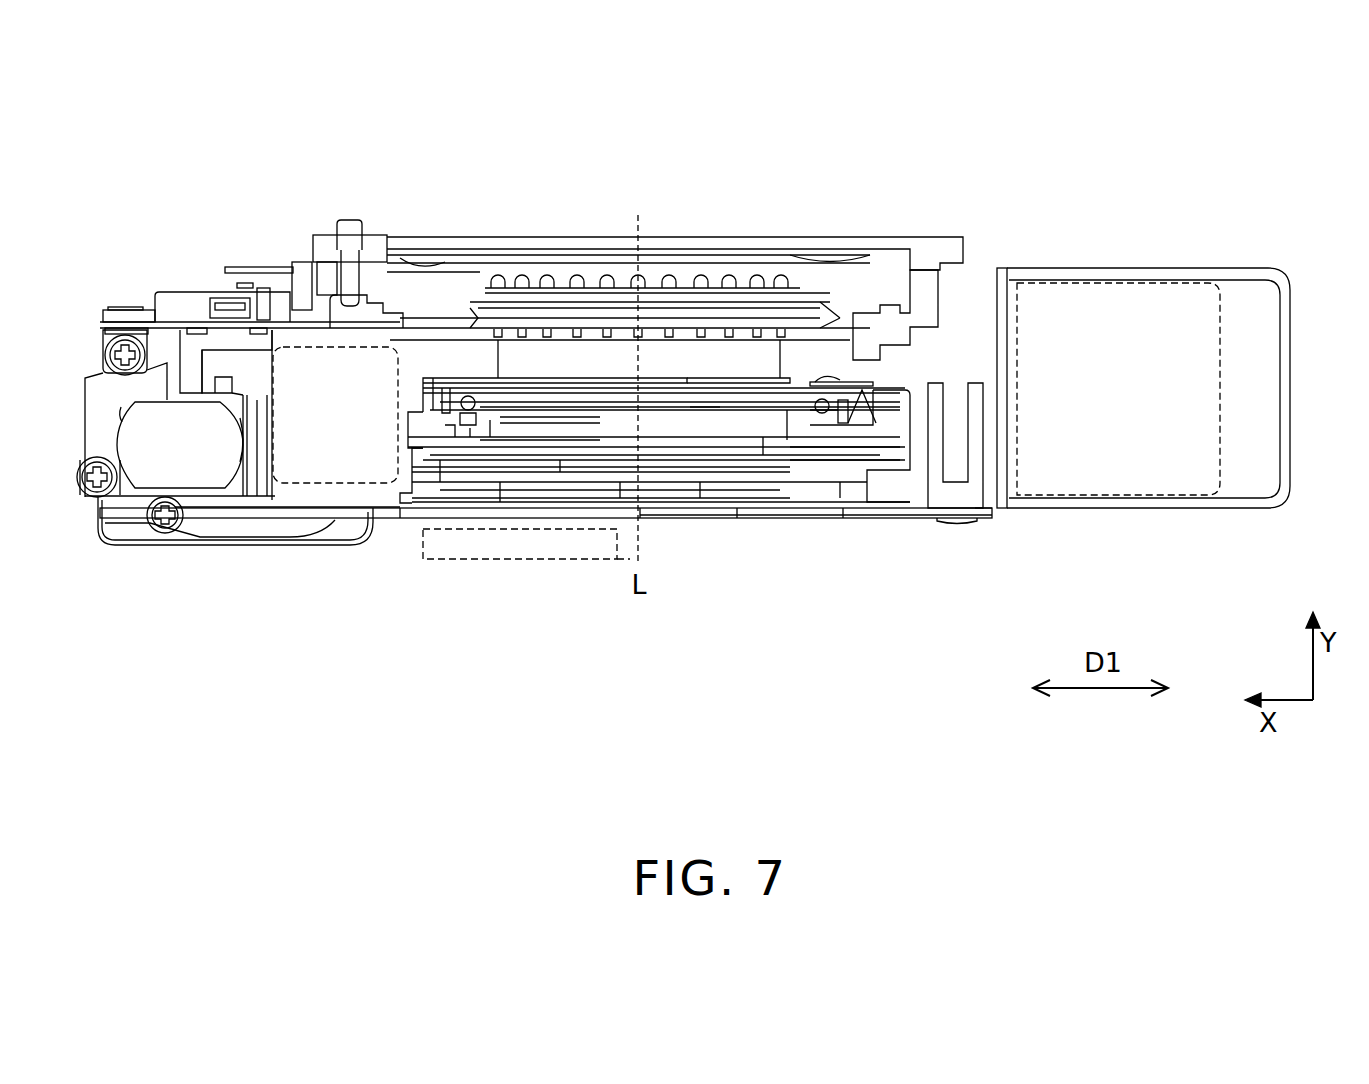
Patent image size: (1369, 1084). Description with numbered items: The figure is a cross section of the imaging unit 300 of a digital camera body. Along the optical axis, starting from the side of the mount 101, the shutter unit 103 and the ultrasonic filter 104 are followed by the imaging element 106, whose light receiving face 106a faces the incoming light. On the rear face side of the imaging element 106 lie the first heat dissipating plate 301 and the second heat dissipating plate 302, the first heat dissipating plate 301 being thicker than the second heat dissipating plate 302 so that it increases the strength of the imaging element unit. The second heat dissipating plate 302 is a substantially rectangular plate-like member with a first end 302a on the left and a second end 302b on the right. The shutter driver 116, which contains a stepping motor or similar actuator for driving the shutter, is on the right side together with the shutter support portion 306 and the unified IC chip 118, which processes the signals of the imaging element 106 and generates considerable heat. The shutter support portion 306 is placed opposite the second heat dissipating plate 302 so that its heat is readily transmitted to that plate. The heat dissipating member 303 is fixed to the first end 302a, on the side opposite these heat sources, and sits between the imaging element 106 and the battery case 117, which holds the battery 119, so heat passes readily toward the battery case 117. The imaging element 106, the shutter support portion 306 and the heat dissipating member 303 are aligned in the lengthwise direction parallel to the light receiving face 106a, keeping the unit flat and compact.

The mount 101 is at (425, 232).
The shutter unit 103 is at (818, 357).
The ultrasonic filter 104 is at (530, 425).
The imaging element 106 is at (563, 455).
The light receiving face 106a is at (701, 407).
The shutter driver 116 is at (170, 472).
The battery case 117 is at (1200, 258).
The unified IC chip 118 is at (450, 545).
The battery 119 is at (1130, 280).
The imaging unit 300 is at (972, 192).
The first heat dissipating plate 301 is at (805, 474).
The second heat dissipating plate 302 is at (870, 514).
The first end 302a is at (978, 518).
The second end 302b is at (240, 512).
The heat dissipating member 303 is at (938, 494).
The shutter support portion 306 is at (340, 483).